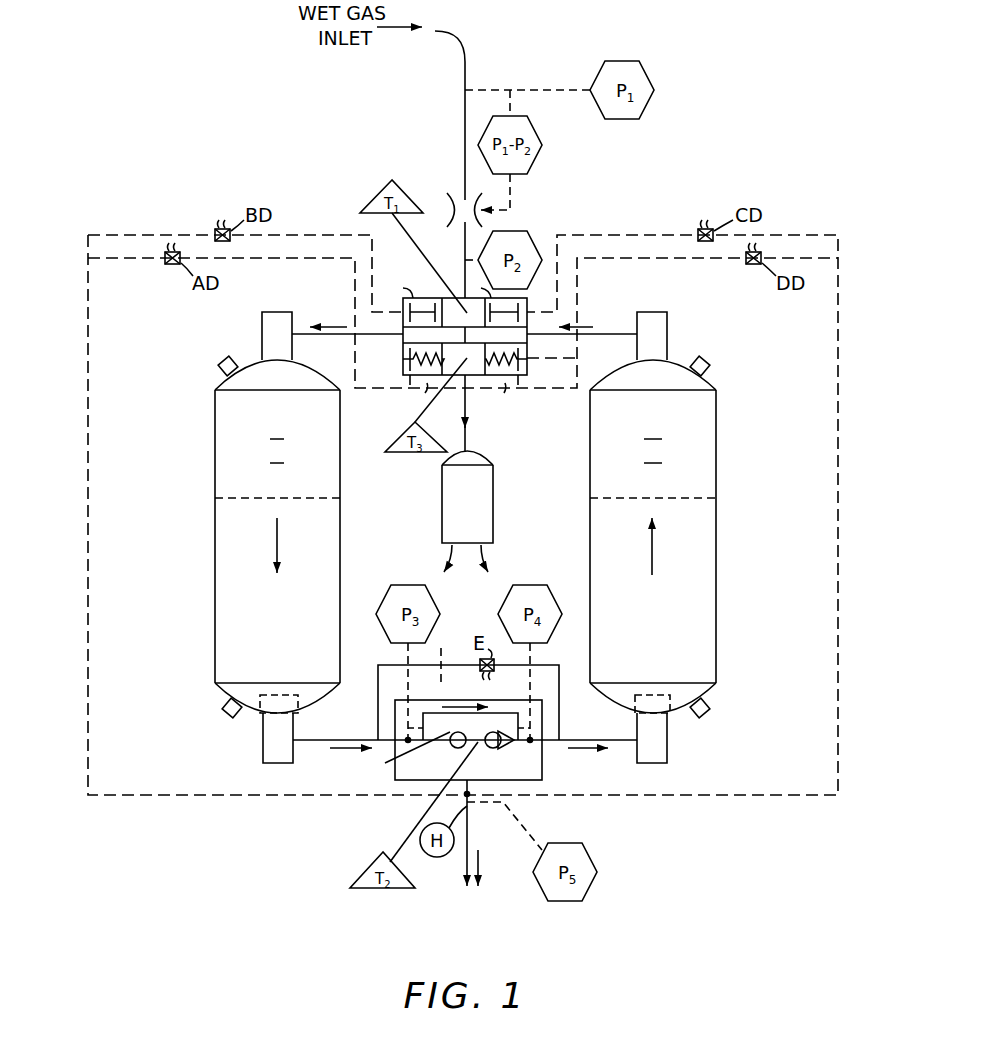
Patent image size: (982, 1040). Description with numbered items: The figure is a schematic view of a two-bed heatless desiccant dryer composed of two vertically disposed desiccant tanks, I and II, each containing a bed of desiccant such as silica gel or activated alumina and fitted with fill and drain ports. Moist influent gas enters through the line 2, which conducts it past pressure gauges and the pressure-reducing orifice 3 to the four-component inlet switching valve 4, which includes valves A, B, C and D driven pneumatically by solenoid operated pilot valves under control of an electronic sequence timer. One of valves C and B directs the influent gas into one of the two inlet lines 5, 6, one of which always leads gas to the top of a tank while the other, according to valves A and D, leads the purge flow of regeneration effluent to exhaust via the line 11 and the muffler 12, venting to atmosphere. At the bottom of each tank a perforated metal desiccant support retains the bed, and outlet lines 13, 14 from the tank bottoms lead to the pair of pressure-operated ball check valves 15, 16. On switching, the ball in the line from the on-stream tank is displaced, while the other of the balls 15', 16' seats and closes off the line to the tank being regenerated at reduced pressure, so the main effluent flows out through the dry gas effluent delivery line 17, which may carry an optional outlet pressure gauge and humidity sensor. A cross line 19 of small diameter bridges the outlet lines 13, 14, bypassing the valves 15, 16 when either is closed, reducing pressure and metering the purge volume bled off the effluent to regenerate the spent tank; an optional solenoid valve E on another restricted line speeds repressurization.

The line 2 is at (467, 62).
The pressure-reducing orifice 3 is at (448, 198).
The four-component inlet switching valve 4 is at (457, 294).
The inlet line 5 is at (298, 330).
The inlet line 6 is at (622, 332).
The line 11 is at (470, 437).
The muffler 12 is at (494, 512).
The outlet line 13 is at (318, 745).
The outlet line 14 is at (619, 745).
The ball check valve 15 is at (409, 756).
The ball 15' is at (446, 756).
The ball check valve 16 is at (518, 755).
The ball 16' is at (496, 756).
The dry gas effluent delivery line 17 is at (470, 824).
The cross line 19 is at (431, 710).